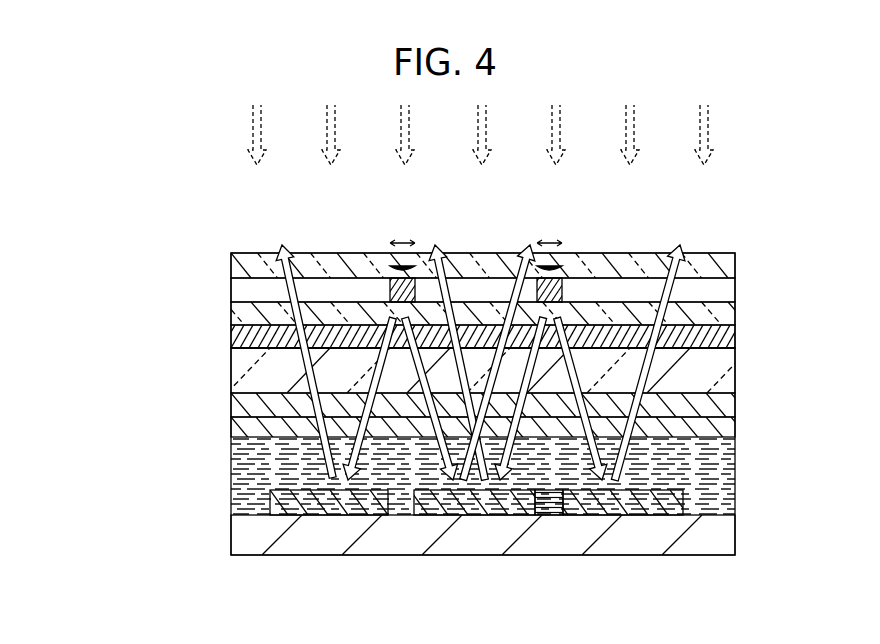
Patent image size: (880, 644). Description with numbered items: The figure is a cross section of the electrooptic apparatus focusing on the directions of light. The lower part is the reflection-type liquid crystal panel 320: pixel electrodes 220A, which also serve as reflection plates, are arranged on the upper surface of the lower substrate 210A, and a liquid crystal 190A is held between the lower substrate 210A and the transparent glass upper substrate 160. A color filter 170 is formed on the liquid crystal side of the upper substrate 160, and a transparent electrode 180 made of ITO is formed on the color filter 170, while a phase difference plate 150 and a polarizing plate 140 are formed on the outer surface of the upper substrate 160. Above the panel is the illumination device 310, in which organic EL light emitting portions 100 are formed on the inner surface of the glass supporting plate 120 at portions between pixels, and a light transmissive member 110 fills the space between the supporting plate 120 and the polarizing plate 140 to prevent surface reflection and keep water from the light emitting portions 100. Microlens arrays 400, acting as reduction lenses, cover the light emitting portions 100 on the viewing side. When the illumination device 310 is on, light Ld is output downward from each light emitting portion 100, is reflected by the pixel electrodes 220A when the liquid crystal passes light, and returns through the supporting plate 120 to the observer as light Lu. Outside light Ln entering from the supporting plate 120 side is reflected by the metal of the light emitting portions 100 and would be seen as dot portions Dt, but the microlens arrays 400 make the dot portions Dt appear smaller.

The light emitting portion 100 is at (425, 272).
The light transmissive member 110 is at (350, 288).
The supporting plate 120 is at (246, 256).
The polarizing plate 140 is at (648, 308).
The phase difference plate 150 is at (714, 330).
The upper substrate 160 is at (242, 378).
The color filter 170 is at (240, 407).
The transparent electrode 180 is at (237, 430).
The liquid crystal 190A is at (545, 486).
The lower substrate 210A is at (308, 540).
The pixel electrode 220A is at (465, 512).
The illumination device 310 is at (770, 255).
The reflection-type liquid crystal panel 320 is at (770, 563).
The microlens array 400 is at (415, 278).
The incident light Ln is at (480, 152).
The reflected light Lu is at (314, 386).
The output light Ld is at (374, 388).
The dot portion Dt is at (476, 229).